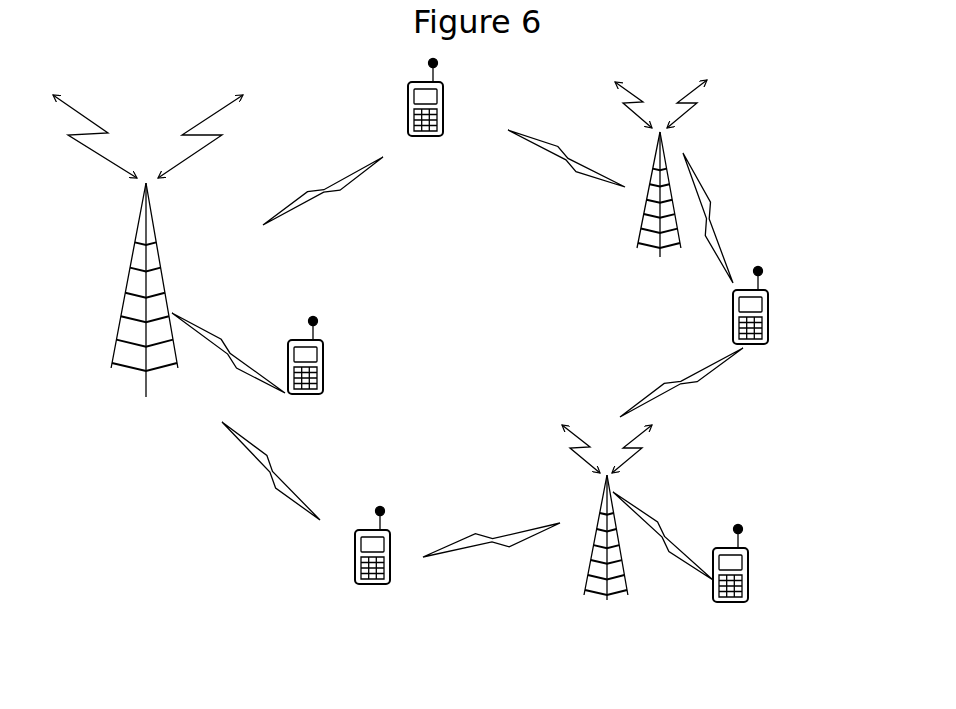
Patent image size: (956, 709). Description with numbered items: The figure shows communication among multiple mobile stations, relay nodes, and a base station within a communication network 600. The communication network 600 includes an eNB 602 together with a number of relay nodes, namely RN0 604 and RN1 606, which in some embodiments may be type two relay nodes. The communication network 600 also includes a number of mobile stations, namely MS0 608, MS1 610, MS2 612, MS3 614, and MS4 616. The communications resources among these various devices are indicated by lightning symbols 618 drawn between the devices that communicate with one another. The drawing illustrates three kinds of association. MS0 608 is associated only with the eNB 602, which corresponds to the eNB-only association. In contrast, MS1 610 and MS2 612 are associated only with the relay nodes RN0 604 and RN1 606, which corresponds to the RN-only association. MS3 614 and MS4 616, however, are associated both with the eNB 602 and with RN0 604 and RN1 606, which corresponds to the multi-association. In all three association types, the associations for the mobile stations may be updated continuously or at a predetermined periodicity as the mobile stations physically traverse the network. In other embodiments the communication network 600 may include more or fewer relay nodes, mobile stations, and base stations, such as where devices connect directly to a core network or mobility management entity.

The communication network 600 is at (147, 505).
The eNB 602 is at (115, 367).
The RN0 604 is at (663, 247).
The RN1 606 is at (608, 592).
The MS0 608 is at (313, 358).
The MS1 610 is at (733, 600).
The MS2 612 is at (752, 338).
The MS3 614 is at (422, 138).
The MS4 616 is at (358, 583).
The lightning symbols 618 is at (222, 343).